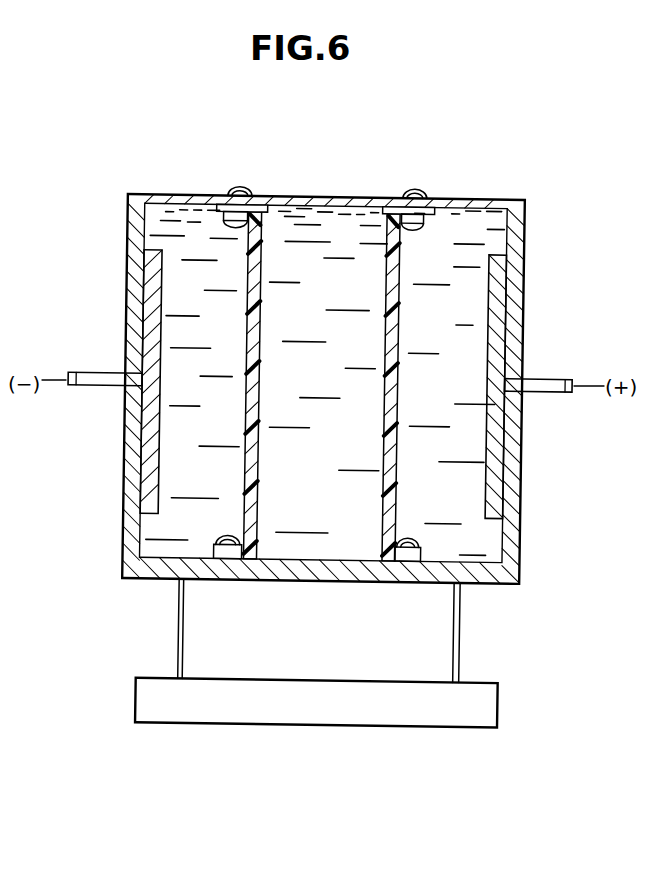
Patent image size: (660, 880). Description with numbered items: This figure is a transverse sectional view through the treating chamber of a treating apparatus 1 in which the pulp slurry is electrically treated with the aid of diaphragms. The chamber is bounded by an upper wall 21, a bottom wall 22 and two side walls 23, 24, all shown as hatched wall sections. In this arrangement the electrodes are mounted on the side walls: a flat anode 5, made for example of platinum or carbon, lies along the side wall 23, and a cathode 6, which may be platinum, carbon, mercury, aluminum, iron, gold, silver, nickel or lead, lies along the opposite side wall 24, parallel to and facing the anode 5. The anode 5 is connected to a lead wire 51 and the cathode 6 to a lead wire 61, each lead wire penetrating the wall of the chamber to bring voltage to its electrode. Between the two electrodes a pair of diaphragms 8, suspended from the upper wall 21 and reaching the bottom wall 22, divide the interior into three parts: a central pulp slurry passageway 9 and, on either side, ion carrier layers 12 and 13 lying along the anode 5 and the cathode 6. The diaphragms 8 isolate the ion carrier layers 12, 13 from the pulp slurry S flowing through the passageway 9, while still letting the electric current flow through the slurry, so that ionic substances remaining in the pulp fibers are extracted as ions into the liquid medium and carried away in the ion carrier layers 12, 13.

The treating apparatus 1 is at (523, 242).
The upper wall 21 is at (194, 196).
The bottom wall 22 is at (354, 582).
The side wall 23 is at (524, 276).
The side wall 24 is at (130, 296).
The anode 5 is at (497, 333).
The cathode 6 is at (152, 341).
The lead wire 51 is at (550, 388).
The lead wire 61 is at (104, 388).
The diaphragm 8 is at (263, 236).
The pulp slurry passageway 9 is at (301, 240).
The pulp slurry S is at (343, 307).
The ion carrier layer 12 is at (460, 500).
The ion carrier layer 13 is at (175, 514).